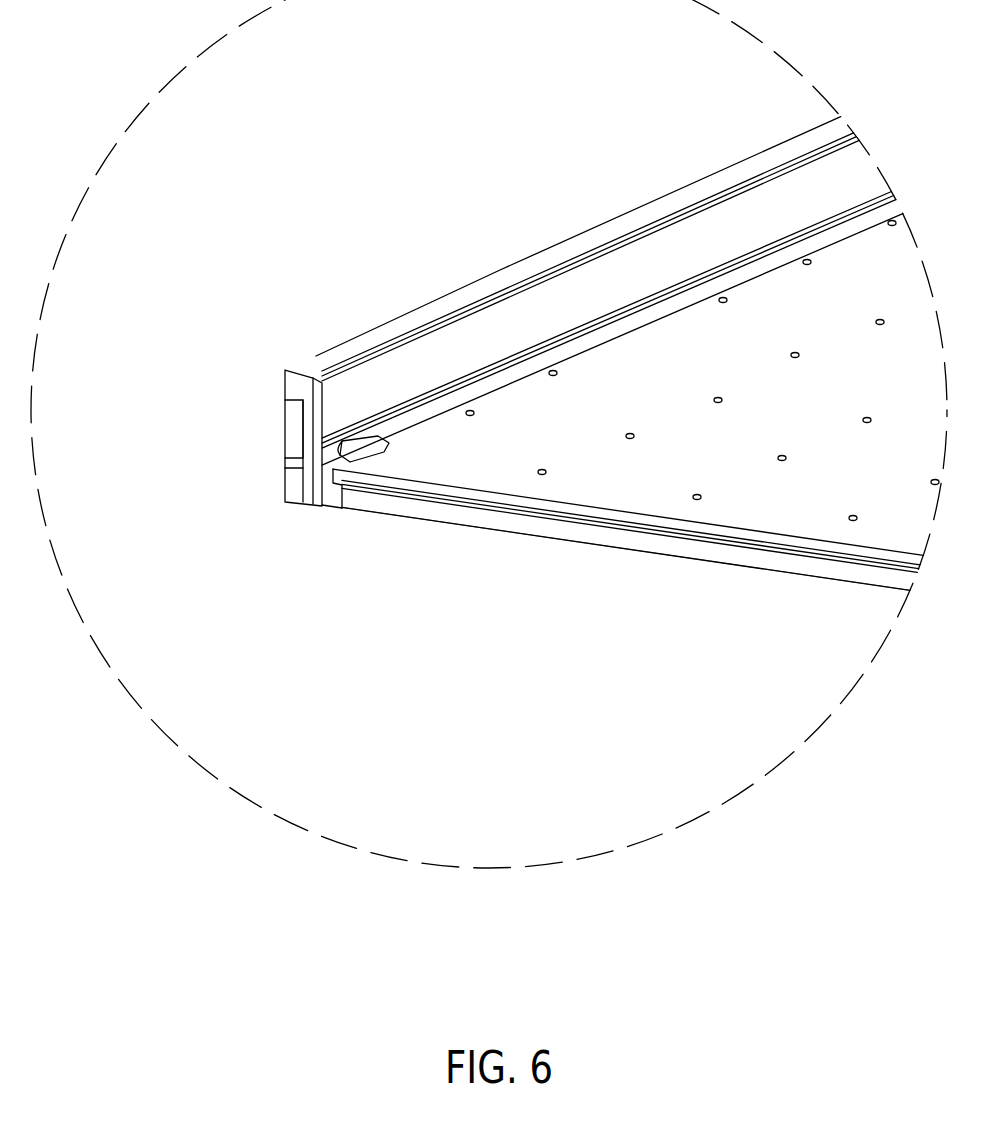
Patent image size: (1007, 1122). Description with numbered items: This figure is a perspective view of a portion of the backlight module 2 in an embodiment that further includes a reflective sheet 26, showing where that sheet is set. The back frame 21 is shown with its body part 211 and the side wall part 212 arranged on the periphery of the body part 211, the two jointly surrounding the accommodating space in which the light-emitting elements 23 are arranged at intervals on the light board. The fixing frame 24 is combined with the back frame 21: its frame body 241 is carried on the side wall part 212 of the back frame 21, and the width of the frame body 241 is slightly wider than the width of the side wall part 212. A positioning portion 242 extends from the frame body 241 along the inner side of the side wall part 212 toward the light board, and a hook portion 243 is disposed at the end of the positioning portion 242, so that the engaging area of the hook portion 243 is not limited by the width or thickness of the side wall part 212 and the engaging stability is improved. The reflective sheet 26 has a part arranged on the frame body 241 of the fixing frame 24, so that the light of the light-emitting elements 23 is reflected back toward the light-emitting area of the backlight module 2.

The backlight module 2 is at (537, 190).
The back frame 21 is at (598, 552).
The body part 211 is at (467, 517).
The side wall part 212 is at (295, 433).
The light-emitting elements 23 is at (782, 461).
The fixing frame 24 is at (345, 337).
The frame body 241 is at (285, 383).
The positioning portion 242 is at (313, 375).
The hook portion 243 is at (295, 483).
The reflective sheet 26 is at (768, 203).